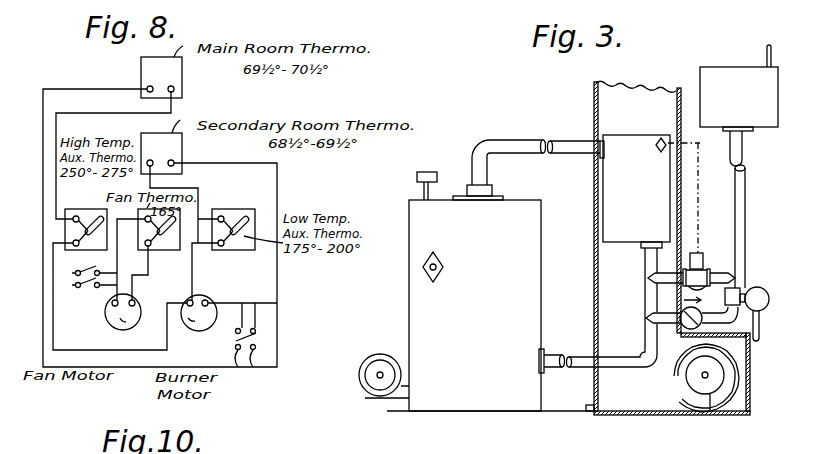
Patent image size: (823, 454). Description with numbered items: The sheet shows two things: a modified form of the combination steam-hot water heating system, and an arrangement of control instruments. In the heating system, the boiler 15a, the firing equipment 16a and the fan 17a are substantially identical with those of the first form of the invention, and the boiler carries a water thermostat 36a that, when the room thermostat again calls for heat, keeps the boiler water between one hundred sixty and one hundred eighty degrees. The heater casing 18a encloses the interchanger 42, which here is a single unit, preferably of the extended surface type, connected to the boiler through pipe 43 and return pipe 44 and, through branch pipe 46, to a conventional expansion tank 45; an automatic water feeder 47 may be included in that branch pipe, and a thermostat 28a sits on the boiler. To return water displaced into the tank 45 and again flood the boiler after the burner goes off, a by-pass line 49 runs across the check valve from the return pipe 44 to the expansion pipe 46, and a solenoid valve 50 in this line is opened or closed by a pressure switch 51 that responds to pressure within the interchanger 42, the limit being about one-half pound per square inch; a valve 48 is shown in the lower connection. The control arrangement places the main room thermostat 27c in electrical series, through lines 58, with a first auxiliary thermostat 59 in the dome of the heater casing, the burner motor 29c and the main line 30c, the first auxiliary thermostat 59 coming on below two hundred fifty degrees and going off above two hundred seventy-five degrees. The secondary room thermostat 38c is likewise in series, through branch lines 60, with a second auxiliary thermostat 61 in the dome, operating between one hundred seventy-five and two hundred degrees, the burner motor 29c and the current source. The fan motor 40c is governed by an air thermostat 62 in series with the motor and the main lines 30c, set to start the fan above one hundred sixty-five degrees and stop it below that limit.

In FIG. 8, the main room thermostat 27c is at (190, 67).
In FIG. 8, the lines 58 is at (64, 90).
In FIG. 8, the secondary room thermostat 38c is at (188, 137).
In FIG. 8, the branch lines 60 is at (250, 166).
In FIG. 8, the first auxiliary thermostat 59 is at (73, 180).
In FIG. 8, the air thermostat 62 is at (157, 250).
In FIG. 8, the second auxiliary thermostat 61 is at (229, 250).
In FIG. 8, the fan motor 40c is at (128, 322).
In FIG. 8, the burner motor 29c is at (184, 323).
In FIG. 8, the main line 30c is at (234, 367).
In FIG. 3, the furnace casing 18a is at (595, 103).
In FIG. 3, the interchanger 42 is at (635, 191).
In FIG. 3, the pressure switch 51 is at (659, 140).
In FIG. 3, the pipe 43 is at (548, 126).
In FIG. 3, the thermostat 28a is at (431, 165).
In FIG. 3, the boiler 15a is at (475, 305).
In FIG. 3, the water thermostat 36a is at (440, 275).
In FIG. 3, the firing equipment 16a is at (387, 350).
In FIG. 3, the return pipe 44 is at (613, 364).
In FIG. 3, the by-pass line 49 is at (669, 283).
In FIG. 3, the solenoid valve 50 is at (702, 272).
In FIG. 3, the pipe 48 is at (670, 322).
In FIG. 3, the automatic water feeder 47 is at (759, 297).
In FIG. 3, the branch pipe 46 is at (749, 202).
In FIG. 3, the expansion tank 45 is at (754, 353).
In FIG. 3, the fan 17a is at (708, 411).